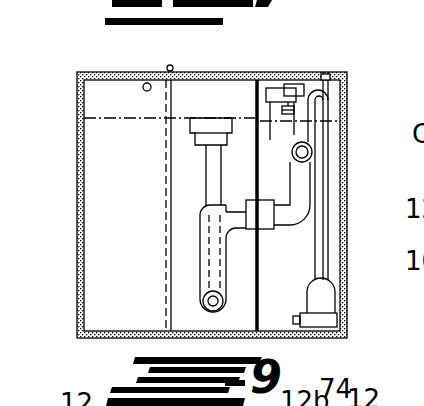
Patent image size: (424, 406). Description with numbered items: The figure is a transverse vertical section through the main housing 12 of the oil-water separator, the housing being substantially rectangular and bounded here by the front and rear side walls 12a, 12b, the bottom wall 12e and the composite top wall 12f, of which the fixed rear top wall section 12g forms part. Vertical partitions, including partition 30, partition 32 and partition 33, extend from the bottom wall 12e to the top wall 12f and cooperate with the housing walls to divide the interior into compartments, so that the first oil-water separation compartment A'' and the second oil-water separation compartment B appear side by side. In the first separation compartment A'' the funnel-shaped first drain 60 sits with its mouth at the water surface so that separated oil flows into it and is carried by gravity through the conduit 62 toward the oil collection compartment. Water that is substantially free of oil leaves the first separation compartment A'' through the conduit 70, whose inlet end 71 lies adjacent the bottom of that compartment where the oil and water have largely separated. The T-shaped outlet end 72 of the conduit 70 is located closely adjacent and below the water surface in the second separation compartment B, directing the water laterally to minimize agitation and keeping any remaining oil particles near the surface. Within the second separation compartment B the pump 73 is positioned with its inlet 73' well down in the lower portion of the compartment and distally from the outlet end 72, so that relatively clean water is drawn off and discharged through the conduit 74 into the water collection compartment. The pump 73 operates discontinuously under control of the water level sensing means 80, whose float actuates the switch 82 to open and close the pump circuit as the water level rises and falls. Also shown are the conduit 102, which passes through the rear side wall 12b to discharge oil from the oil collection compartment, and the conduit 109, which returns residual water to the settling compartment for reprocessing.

The main housing 12 is at (361, 70).
The front side wall 12a is at (342, 179).
The rear side wall 12b is at (77, 190).
The bottom wall 12e is at (128, 338).
The composite top wall 12f is at (224, 72).
The fixed rear top wall section 12g is at (131, 72).
The partition 30 is at (133, 110).
The partition 32 is at (260, 292).
The partition 33 is at (325, 74).
The first drain 60 is at (191, 122).
The conduit 62 is at (206, 161).
The conduit 70 is at (202, 272).
The inlet end 71 is at (207, 313).
The outlet end 72 is at (313, 151).
The pump 73 is at (343, 302).
The inlet 73' is at (314, 343).
The conduit 74 is at (330, 257).
The water level sensing means 80 is at (333, 107).
The switch 82 is at (296, 86).
The conduit 102 is at (78, 297).
The conduit 109 is at (147, 87).
The first oil-water separation compartment A'' is at (67, 230).
The second oil-water separation compartment B is at (333, 226).